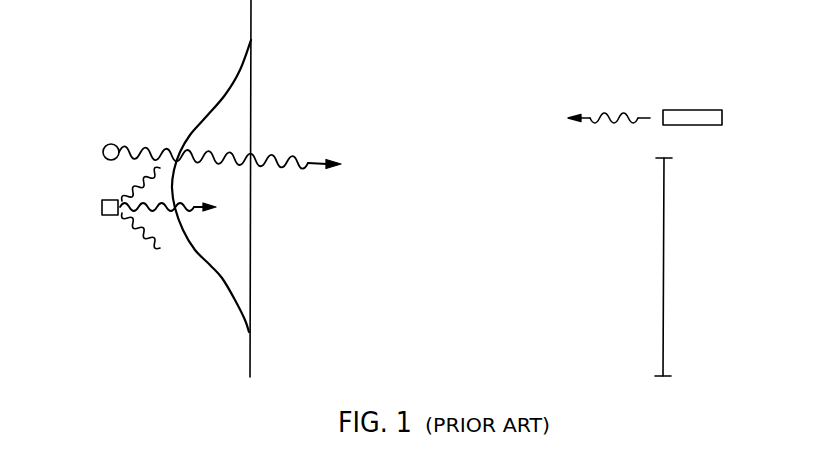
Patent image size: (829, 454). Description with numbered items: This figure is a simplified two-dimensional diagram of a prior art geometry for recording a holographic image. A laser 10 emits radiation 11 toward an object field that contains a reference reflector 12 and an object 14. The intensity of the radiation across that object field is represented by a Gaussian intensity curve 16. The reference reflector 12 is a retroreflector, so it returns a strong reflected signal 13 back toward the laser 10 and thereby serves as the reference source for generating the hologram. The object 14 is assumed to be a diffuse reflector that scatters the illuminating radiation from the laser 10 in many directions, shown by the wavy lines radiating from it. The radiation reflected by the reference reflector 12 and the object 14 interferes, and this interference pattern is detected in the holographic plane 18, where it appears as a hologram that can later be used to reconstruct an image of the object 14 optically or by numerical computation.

The laser 10 is at (688, 110).
The radiation 11 is at (609, 122).
The reference reflector 12 is at (103, 150).
The reflected signal 13 is at (273, 155).
The object 14 is at (102, 208).
The Gaussian intensity curve 16 is at (220, 277).
The holographic plane 18 is at (664, 312).